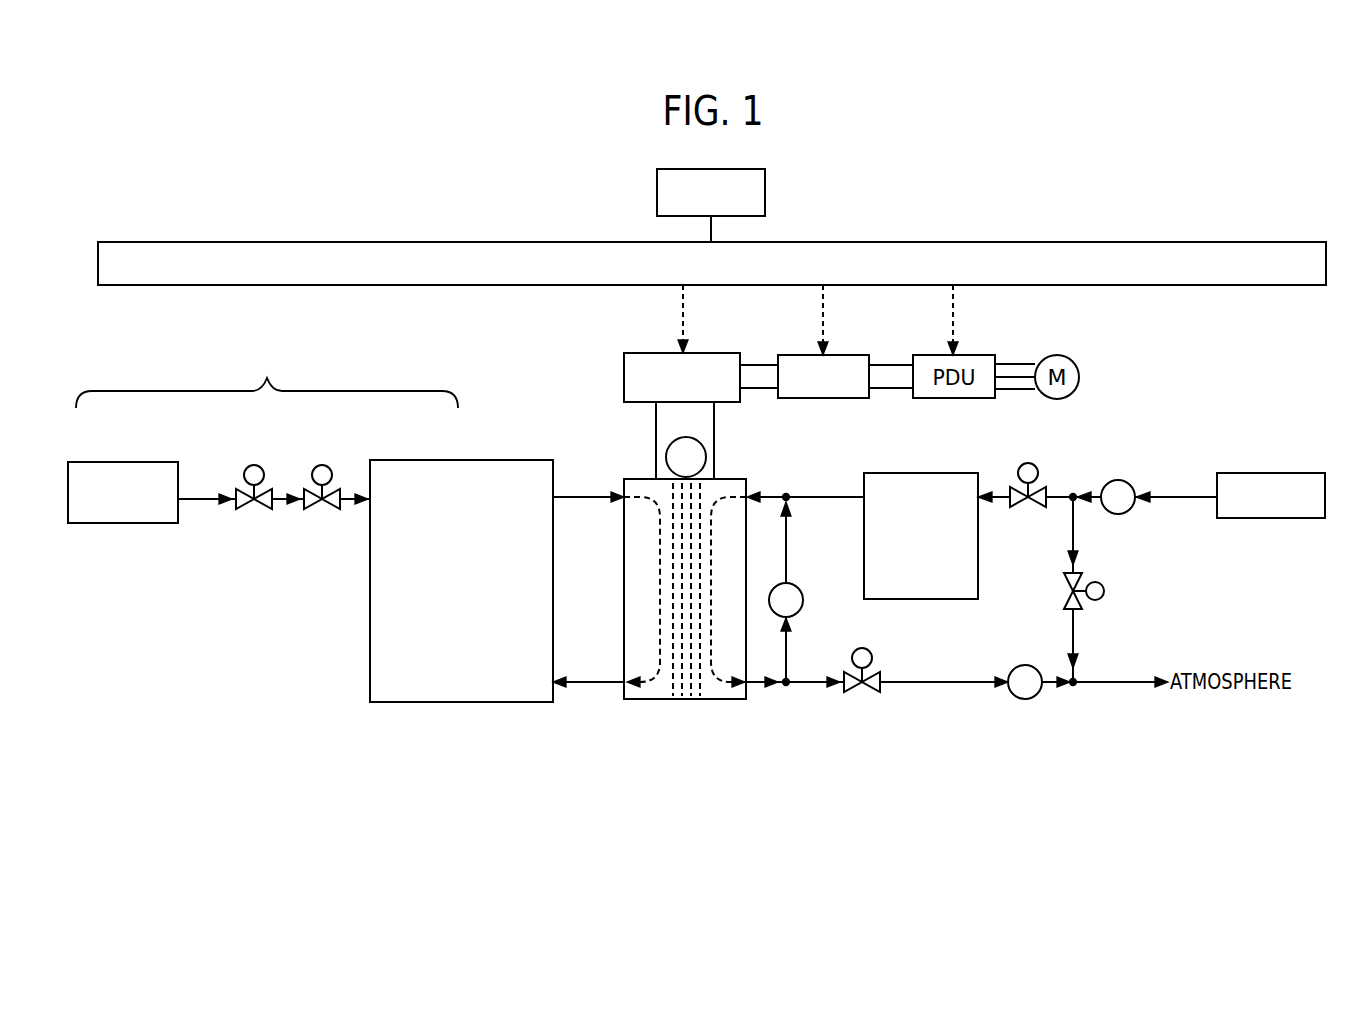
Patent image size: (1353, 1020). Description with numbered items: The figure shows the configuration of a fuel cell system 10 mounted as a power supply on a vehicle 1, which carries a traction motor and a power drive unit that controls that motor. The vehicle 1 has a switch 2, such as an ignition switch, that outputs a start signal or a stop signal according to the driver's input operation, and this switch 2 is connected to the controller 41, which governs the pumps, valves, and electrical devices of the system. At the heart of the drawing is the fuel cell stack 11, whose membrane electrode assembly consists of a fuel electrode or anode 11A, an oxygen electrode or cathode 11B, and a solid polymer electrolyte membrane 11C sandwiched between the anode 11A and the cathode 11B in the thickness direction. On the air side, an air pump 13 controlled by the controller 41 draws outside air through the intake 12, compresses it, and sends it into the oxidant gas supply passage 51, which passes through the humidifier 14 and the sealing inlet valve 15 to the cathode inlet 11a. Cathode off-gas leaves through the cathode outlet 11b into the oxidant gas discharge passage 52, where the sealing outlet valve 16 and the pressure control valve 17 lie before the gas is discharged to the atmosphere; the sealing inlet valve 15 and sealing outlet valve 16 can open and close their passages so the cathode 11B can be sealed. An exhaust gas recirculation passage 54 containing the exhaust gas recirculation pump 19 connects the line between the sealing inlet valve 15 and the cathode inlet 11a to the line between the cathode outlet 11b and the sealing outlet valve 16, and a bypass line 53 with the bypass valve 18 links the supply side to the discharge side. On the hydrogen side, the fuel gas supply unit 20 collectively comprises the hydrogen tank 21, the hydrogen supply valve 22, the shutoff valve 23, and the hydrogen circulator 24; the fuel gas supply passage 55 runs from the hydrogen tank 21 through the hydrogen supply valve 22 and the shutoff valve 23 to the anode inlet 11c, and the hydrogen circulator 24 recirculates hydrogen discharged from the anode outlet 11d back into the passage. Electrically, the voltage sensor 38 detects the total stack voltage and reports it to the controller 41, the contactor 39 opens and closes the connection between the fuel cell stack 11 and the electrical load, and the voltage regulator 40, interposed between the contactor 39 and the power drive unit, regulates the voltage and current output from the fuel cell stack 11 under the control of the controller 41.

The vehicle 1 is at (1240, 140).
The fuel cell system 10 is at (1150, 186).
The switch 2 is at (765, 188).
The controller 41 is at (810, 240).
The contactor 39 is at (702, 352).
The voltage regulator (FCVCU) 40 is at (842, 354).
The voltage sensor 38 is at (690, 437).
The fuel cell stack 11 is at (697, 598).
The fuel electrode (anode) 11A is at (672, 700).
The oxygen electrode (cathode) 11B is at (696, 700).
The solid polymer electrolyte membrane 11C is at (686, 700).
The cathode inlet 11a is at (754, 494).
The cathode outlet 11b is at (748, 686).
The anode inlet 11c is at (622, 503).
The anode outlet 11d is at (624, 686).
The fuel gas supply unit 20 is at (310, 523).
The hydrogen tank 21 is at (90, 461).
The fuel gas supply passage 55 is at (202, 494).
The hydrogen supply valve 22 is at (254, 465).
The shutoff valve 23 is at (322, 465).
The hydrogen circulator 24 is at (462, 459).
The exhaust gas recirculation pump 19 is at (800, 592).
The exhaust gas recirculation passage 54 is at (789, 645).
The oxidant gas discharge passage 52 is at (812, 685).
The humidifier 14 is at (922, 472).
The sealing inlet valve 15 is at (1033, 463).
The oxidant gas supply passage 51 is at (1062, 492).
The air pump 13 is at (1125, 480).
The intake 12 is at (1264, 472).
The bypass pipe 53 is at (1071, 527).
The bypass valve 18 is at (1106, 591).
The sealing outlet valve 16 is at (872, 652).
The pressure control valve 17 is at (1023, 665).